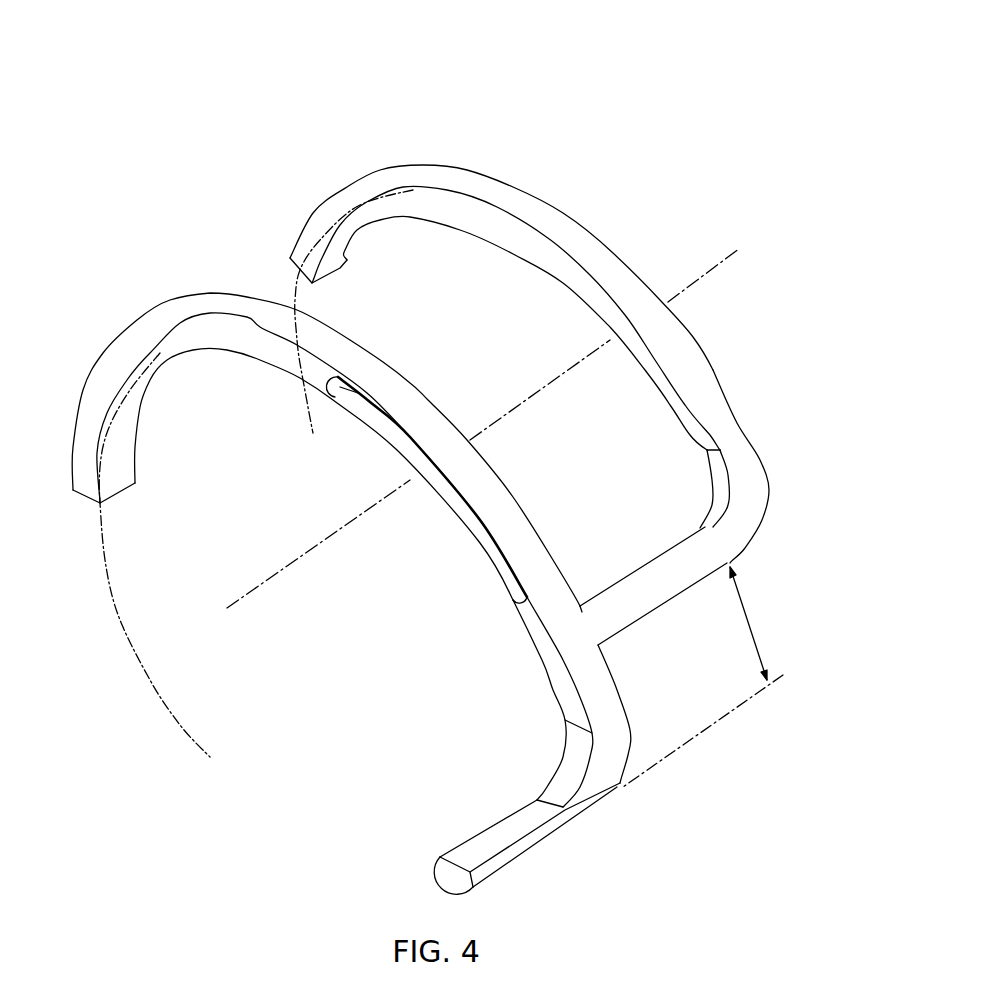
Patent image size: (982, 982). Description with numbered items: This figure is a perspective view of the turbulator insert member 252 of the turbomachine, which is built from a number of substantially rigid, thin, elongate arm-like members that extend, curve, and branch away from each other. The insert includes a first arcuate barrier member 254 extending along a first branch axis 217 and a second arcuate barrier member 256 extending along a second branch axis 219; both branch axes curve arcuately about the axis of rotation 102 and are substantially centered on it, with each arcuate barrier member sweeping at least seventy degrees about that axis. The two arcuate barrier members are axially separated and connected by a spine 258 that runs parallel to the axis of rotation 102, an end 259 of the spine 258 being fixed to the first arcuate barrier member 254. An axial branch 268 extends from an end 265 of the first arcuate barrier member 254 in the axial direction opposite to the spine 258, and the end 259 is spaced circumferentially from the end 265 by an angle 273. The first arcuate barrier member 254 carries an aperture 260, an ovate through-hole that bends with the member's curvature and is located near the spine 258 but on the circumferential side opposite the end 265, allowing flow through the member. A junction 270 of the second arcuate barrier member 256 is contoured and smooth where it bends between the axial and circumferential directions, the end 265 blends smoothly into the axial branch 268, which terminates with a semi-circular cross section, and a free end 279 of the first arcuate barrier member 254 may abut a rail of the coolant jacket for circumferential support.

The turbulator insert member 252 is at (630, 108).
The first arcuate barrier member 254 is at (233, 343).
The second arcuate barrier member 256 is at (562, 284).
The spine 258 is at (680, 578).
The end of the spine 259 is at (606, 604).
The aperture 260 is at (405, 457).
The end of the first arcuate barrier member 265 is at (625, 754).
The axial branch 268 is at (490, 837).
The junction 270 is at (758, 490).
The angle 273 is at (757, 628).
The free end 279 is at (75, 495).
The first branch axis 217 is at (131, 627).
The second branch axis 219 is at (296, 289).
The axis of rotation 102 is at (277, 573).